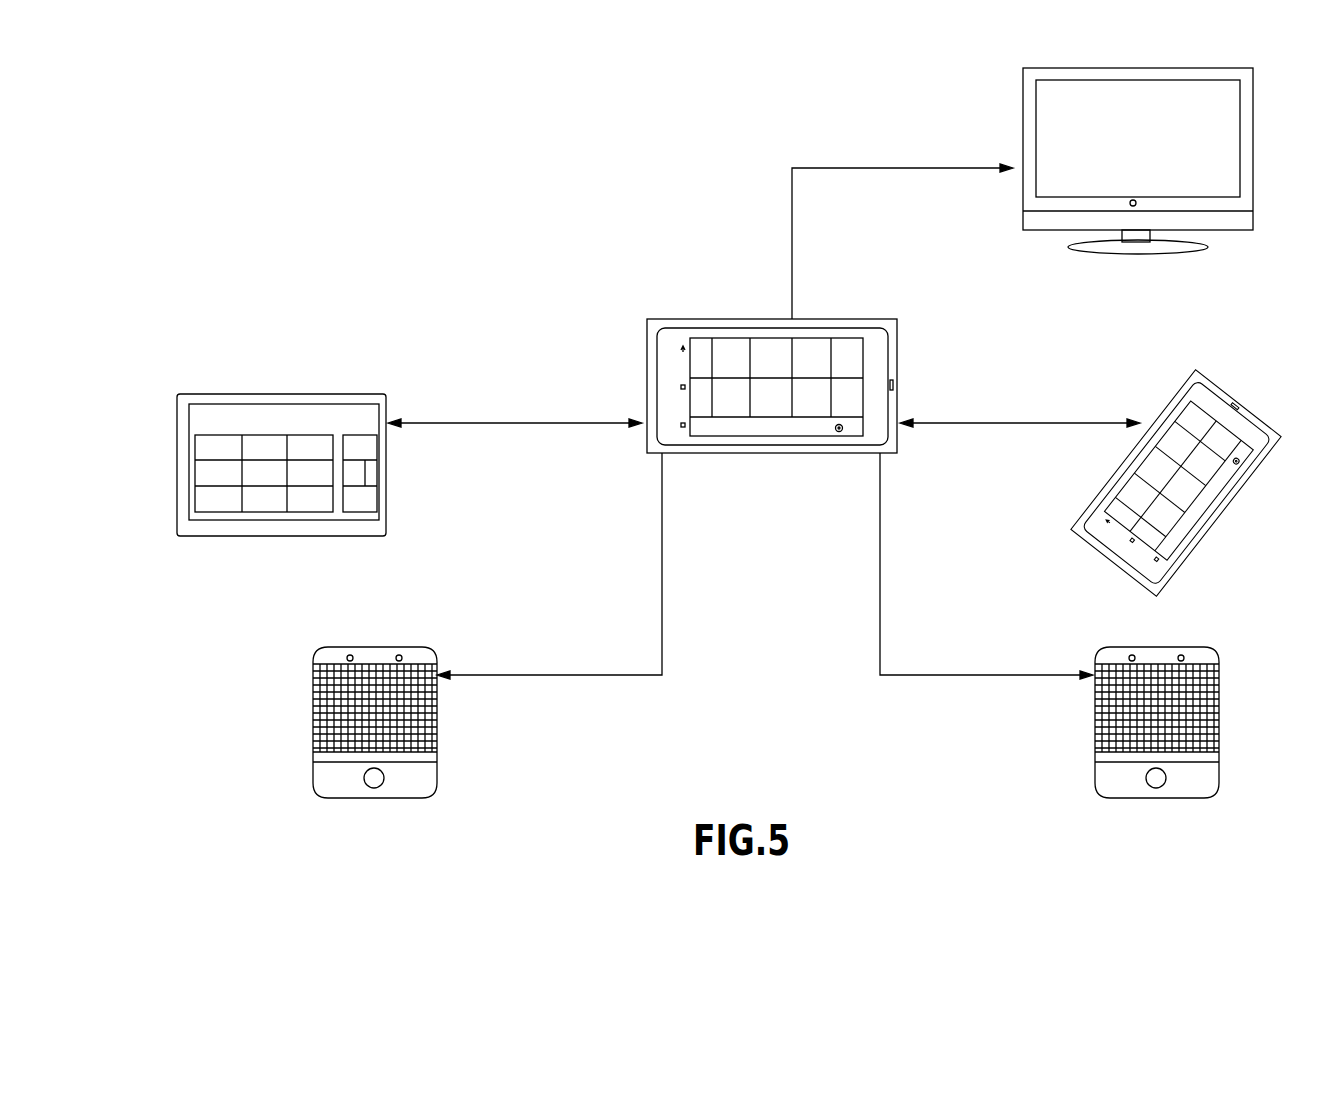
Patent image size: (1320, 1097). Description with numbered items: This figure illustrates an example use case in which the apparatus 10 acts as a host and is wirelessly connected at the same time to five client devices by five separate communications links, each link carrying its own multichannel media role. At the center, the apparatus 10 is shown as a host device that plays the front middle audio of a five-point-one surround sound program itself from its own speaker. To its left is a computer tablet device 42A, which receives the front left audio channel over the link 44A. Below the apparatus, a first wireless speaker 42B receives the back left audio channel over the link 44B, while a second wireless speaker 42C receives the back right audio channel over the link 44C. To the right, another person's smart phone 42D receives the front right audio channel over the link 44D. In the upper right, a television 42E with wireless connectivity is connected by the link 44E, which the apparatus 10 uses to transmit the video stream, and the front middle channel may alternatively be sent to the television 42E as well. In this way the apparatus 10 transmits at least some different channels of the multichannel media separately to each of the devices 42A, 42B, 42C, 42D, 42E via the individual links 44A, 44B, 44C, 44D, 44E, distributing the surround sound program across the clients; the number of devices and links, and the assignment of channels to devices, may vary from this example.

The apparatus 10 is at (897, 343).
The computer tablet device 42A is at (386, 508).
The wireless speaker 42B is at (437, 732).
The wireless speaker 42C is at (1218, 718).
The smart phone 42D is at (1260, 417).
The television 42E is at (1253, 155).
The link 44A is at (430, 422).
The link 44B is at (486, 674).
The link 44C is at (892, 674).
The link 44D is at (932, 422).
The link 44E is at (806, 167).